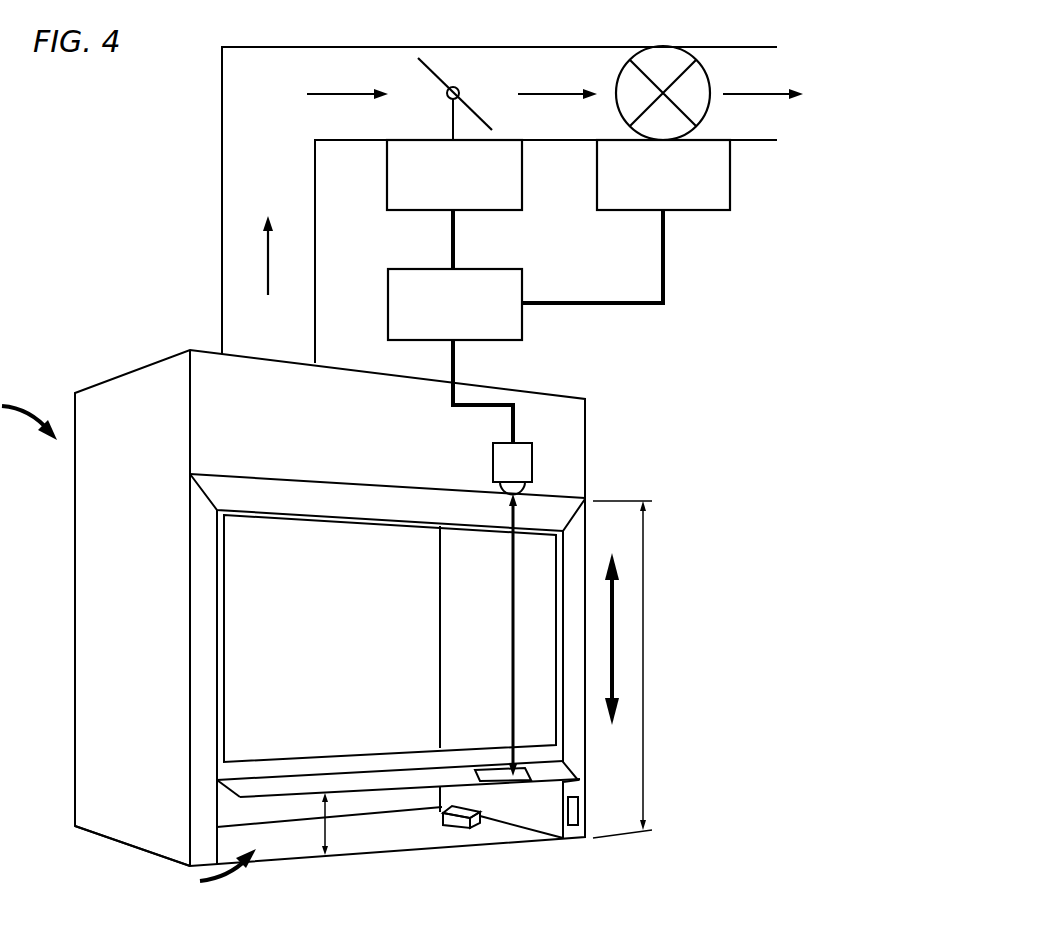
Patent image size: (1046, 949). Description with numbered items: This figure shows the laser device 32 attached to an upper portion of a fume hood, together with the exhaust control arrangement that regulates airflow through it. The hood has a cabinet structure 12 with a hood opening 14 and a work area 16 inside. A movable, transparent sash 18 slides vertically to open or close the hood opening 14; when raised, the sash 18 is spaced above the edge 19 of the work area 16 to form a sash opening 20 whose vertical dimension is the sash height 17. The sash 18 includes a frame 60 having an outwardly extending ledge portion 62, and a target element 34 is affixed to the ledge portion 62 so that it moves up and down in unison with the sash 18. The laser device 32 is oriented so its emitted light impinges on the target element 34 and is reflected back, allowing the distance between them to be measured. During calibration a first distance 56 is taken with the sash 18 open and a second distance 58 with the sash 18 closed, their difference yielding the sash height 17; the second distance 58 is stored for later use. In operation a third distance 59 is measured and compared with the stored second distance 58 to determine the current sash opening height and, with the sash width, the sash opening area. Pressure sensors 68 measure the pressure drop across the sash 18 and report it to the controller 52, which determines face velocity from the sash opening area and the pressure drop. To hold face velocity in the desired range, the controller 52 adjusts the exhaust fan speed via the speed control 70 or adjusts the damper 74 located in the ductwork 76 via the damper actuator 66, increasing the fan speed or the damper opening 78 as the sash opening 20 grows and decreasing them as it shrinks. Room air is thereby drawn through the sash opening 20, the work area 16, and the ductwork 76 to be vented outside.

The cabinet structure 12 is at (87, 642).
The hood opening 14 is at (296, 626).
The work area 16 is at (442, 840).
The sash height 17 is at (325, 828).
The sash 18 is at (549, 578).
The edge of the work area 19 is at (376, 853).
The sash opening 20 is at (214, 873).
The laser device 32 is at (493, 460).
The target element 34 is at (528, 770).
The controller 52 is at (388, 298).
The first distance 56 is at (478, 635).
The third distance 59 is at (513, 612).
The second distance 58 is at (643, 637).
The frame 60 is at (75, 800).
The ledge portion 62 is at (112, 842).
The damper actuator 66 is at (387, 172).
The pressure sensors 68 is at (568, 818).
The speed control 70 is at (730, 168).
The damper 74 is at (437, 80).
The ductwork 76 is at (222, 230).
The damper opening 78 is at (418, 54).